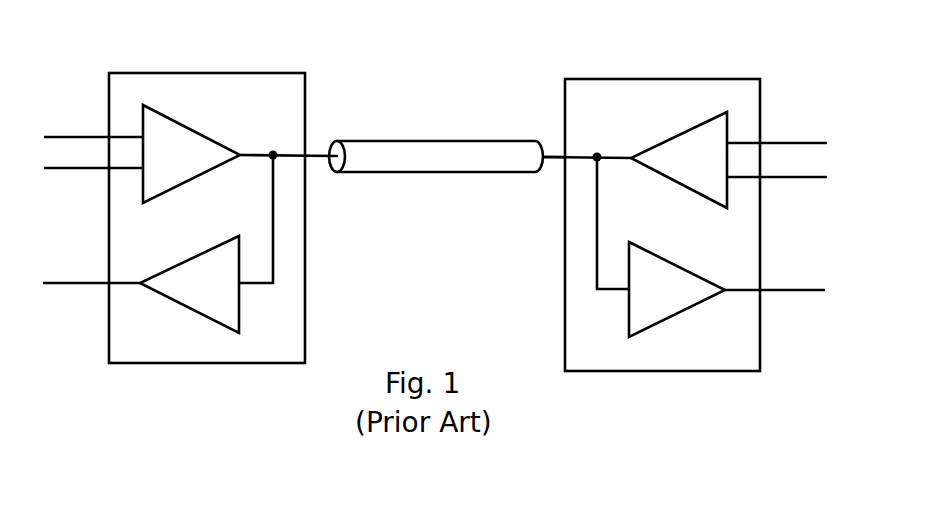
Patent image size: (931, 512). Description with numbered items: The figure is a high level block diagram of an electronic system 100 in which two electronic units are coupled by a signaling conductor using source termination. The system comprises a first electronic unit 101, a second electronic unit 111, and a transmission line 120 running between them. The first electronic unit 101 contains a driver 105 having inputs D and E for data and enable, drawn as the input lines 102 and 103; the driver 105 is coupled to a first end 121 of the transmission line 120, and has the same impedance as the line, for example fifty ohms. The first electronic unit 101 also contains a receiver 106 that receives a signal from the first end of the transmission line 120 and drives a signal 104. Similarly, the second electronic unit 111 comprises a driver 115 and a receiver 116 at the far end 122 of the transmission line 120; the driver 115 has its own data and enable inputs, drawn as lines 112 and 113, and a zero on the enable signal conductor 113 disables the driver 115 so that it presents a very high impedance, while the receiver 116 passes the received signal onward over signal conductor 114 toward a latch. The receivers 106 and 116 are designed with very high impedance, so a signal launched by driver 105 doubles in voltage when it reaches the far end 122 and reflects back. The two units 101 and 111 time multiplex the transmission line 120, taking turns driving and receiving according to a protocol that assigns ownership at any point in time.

The electronic system 100 is at (489, 37).
The first electronic unit 101 is at (222, 73).
The data input of first driver 102 is at (60, 137).
The enable input of first driver 103 is at (60, 168).
The signal 104 is at (57, 281).
The driver 105 is at (185, 127).
The receiver 106 is at (205, 250).
The second electronic unit 111 is at (662, 79).
The data input of second driver 112 is at (777, 143).
The signal conductor 113 is at (775, 177).
The signal conductor 114 is at (775, 290).
The driver 115 is at (692, 130).
The receiver 116 is at (677, 262).
The transmission line 120 is at (402, 140).
The first end 121 is at (323, 148).
The far end 122 is at (548, 150).